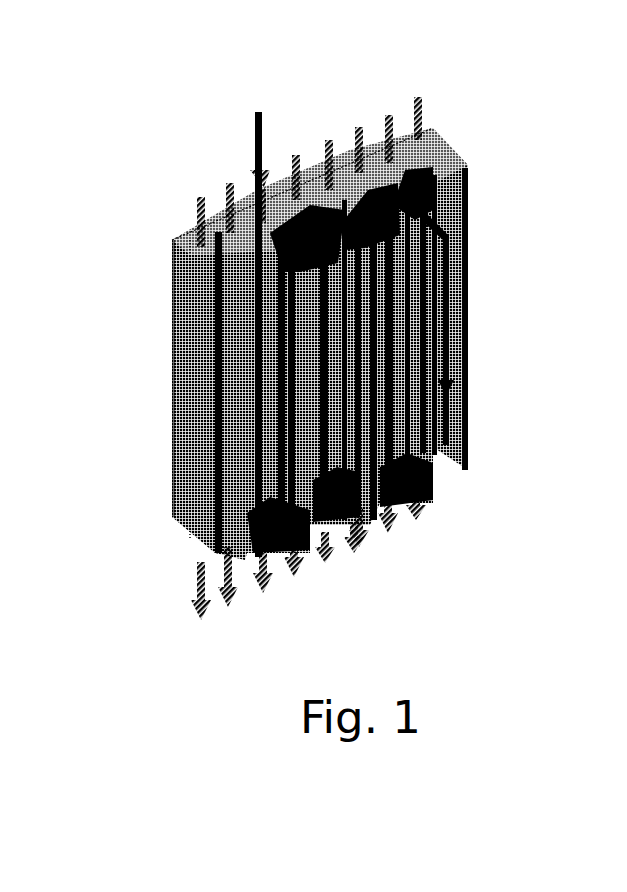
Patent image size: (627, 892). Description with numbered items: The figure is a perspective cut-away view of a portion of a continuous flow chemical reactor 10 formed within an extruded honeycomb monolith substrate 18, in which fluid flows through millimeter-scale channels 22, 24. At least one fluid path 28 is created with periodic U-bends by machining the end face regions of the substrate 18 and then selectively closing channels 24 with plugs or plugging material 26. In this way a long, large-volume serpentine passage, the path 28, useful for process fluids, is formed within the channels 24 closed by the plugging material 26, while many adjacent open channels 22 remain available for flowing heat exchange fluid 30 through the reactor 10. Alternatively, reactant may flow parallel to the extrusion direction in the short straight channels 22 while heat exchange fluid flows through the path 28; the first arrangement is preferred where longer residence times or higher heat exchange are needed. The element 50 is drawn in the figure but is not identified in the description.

The reactor 10 is at (158, 637).
The monolith substrate 18 is at (170, 442).
The open channels 22 is at (188, 247).
The channels 24 is at (303, 453).
The plugs or plugging material 26 is at (447, 163).
The fluid path 28 is at (238, 333).
The heat exchange fluid 30 is at (438, 108).
The central rod 50 is at (246, 153).